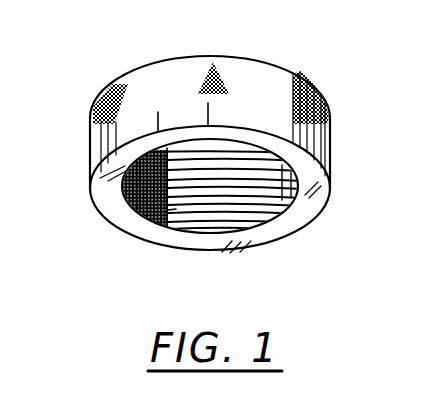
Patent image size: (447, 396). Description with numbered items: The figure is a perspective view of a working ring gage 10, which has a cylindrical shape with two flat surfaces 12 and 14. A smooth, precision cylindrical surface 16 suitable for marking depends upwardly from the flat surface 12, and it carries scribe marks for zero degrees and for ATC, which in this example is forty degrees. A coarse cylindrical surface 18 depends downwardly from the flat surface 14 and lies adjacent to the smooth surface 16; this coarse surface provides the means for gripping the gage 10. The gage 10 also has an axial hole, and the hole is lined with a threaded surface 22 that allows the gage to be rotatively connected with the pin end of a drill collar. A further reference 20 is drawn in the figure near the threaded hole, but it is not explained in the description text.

The adapter ring assembly 10 is at (268, 46).
The ring body front annular face 12 is at (323, 208).
The outer cylindrical surface with indicia 14 is at (287, 69).
The right side wall portion 16 is at (333, 163).
The left side wall portion 18 is at (91, 122).
The threaded bore 20 is at (266, 208).
The internal threads 22 is at (165, 225).